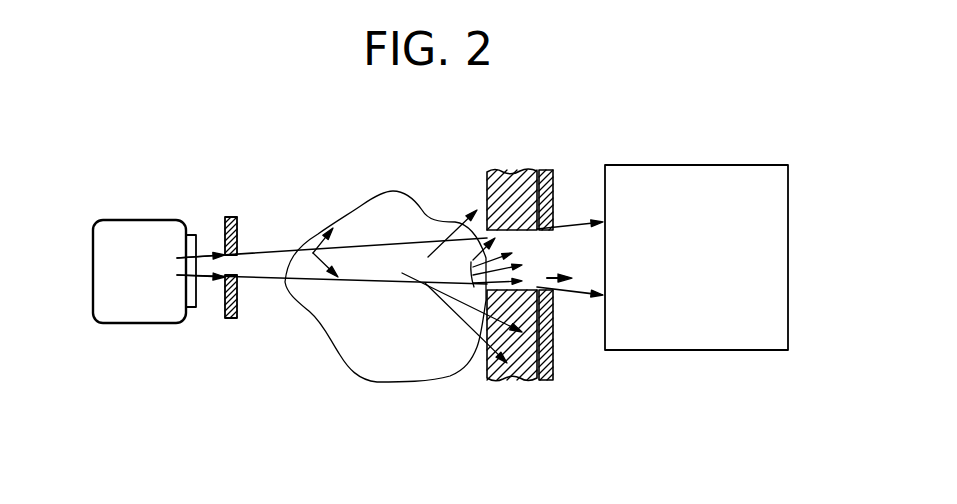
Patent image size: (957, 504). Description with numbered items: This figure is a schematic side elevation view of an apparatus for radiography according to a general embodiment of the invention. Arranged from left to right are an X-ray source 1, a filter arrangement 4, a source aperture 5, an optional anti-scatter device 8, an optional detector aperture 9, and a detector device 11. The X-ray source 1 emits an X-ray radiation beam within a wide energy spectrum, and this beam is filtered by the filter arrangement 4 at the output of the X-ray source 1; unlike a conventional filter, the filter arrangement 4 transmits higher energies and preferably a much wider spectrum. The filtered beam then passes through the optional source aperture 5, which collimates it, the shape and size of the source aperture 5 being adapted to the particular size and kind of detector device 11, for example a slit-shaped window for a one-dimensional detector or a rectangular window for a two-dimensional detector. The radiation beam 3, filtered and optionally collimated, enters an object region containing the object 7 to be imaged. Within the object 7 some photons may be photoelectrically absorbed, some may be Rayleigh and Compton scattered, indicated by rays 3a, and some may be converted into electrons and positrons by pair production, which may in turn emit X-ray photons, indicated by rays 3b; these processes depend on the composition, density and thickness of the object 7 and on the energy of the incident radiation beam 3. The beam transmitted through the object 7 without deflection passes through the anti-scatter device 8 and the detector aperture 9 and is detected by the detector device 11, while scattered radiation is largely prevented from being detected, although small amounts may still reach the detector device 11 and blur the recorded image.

The X-ray source 1 is at (147, 218).
The filter arrangement 4 is at (189, 235).
The source aperture 5 is at (238, 228).
The radiation beam 3 is at (206, 253).
The object 7 is at (360, 208).
The rays 3b is at (313, 253).
The rays 3a is at (472, 346).
The anti-scatter device 8 is at (487, 183).
The detector aperture 9 is at (553, 188).
The detector device 11 is at (703, 165).